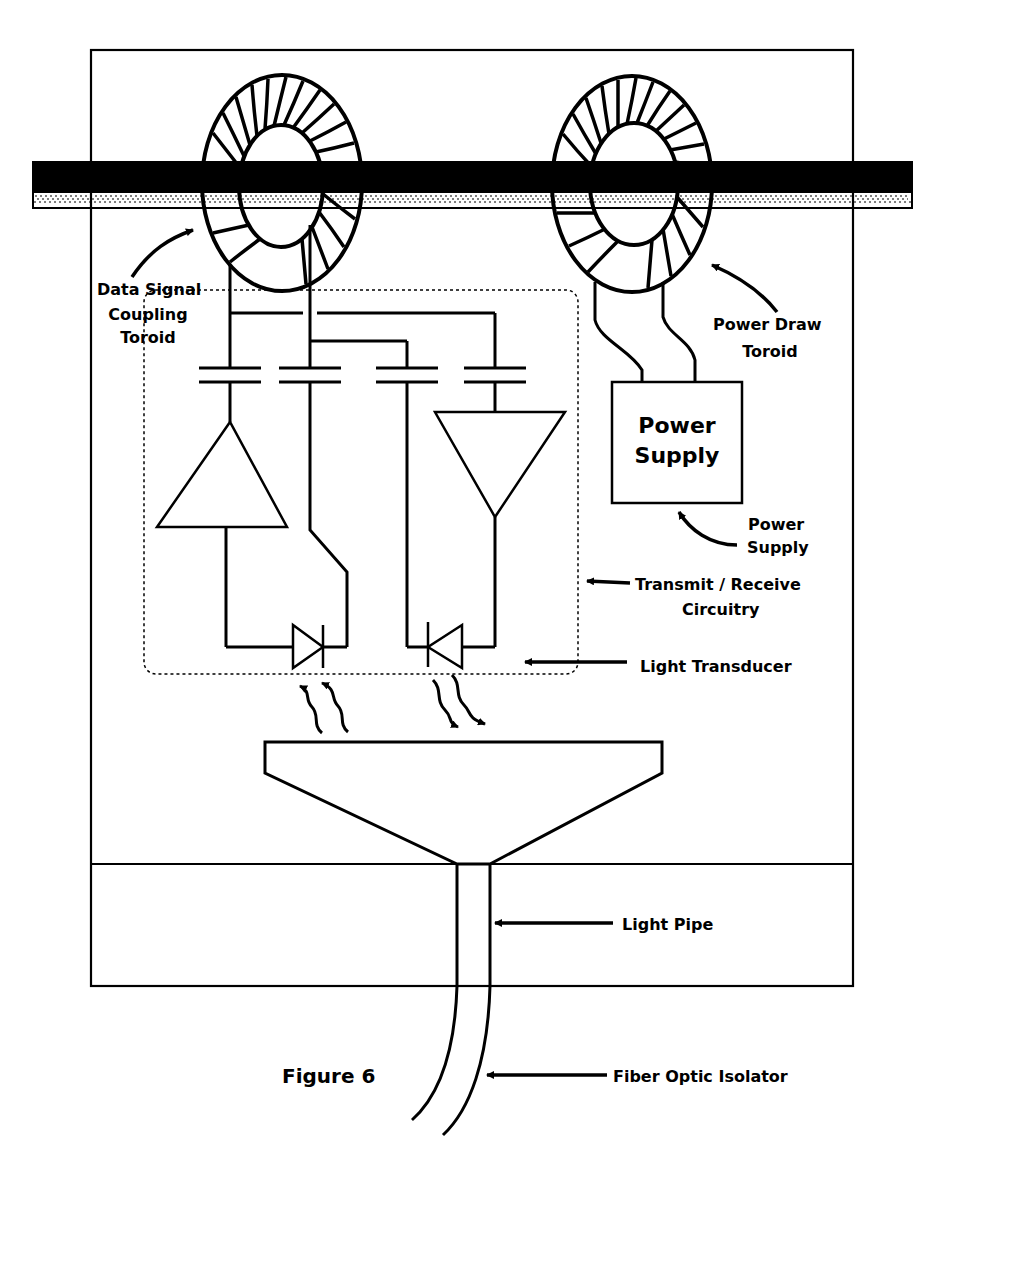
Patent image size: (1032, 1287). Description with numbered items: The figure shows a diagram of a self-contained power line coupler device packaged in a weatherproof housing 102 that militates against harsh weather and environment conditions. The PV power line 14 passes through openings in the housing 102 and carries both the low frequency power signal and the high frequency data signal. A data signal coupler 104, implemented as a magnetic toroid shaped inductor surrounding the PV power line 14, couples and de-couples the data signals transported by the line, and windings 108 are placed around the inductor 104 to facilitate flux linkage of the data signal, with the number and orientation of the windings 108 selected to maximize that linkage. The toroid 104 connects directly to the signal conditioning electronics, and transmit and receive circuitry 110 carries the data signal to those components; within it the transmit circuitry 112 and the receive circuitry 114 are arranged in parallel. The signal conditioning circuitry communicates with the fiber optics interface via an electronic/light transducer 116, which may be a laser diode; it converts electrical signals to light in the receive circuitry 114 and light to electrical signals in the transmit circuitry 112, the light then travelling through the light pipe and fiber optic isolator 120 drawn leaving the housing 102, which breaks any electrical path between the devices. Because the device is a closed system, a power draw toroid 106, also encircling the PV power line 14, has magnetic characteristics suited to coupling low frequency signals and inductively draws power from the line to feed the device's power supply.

The weatherproof housing 102 is at (853, 92).
The PV power line 14 is at (768, 208).
The data signal coupler 104 is at (291, 183).
The windings 108 is at (338, 118).
The power draw toroid 106 is at (712, 140).
The transmit and receive circuitry 110 is at (469, 474).
The transmit circuitry 112 is at (230, 408).
The receive circuitry 114 is at (495, 557).
The electronic/light transducer 116 is at (292, 662).
The light pipe / fiber optic isolator 120 is at (680, 912).